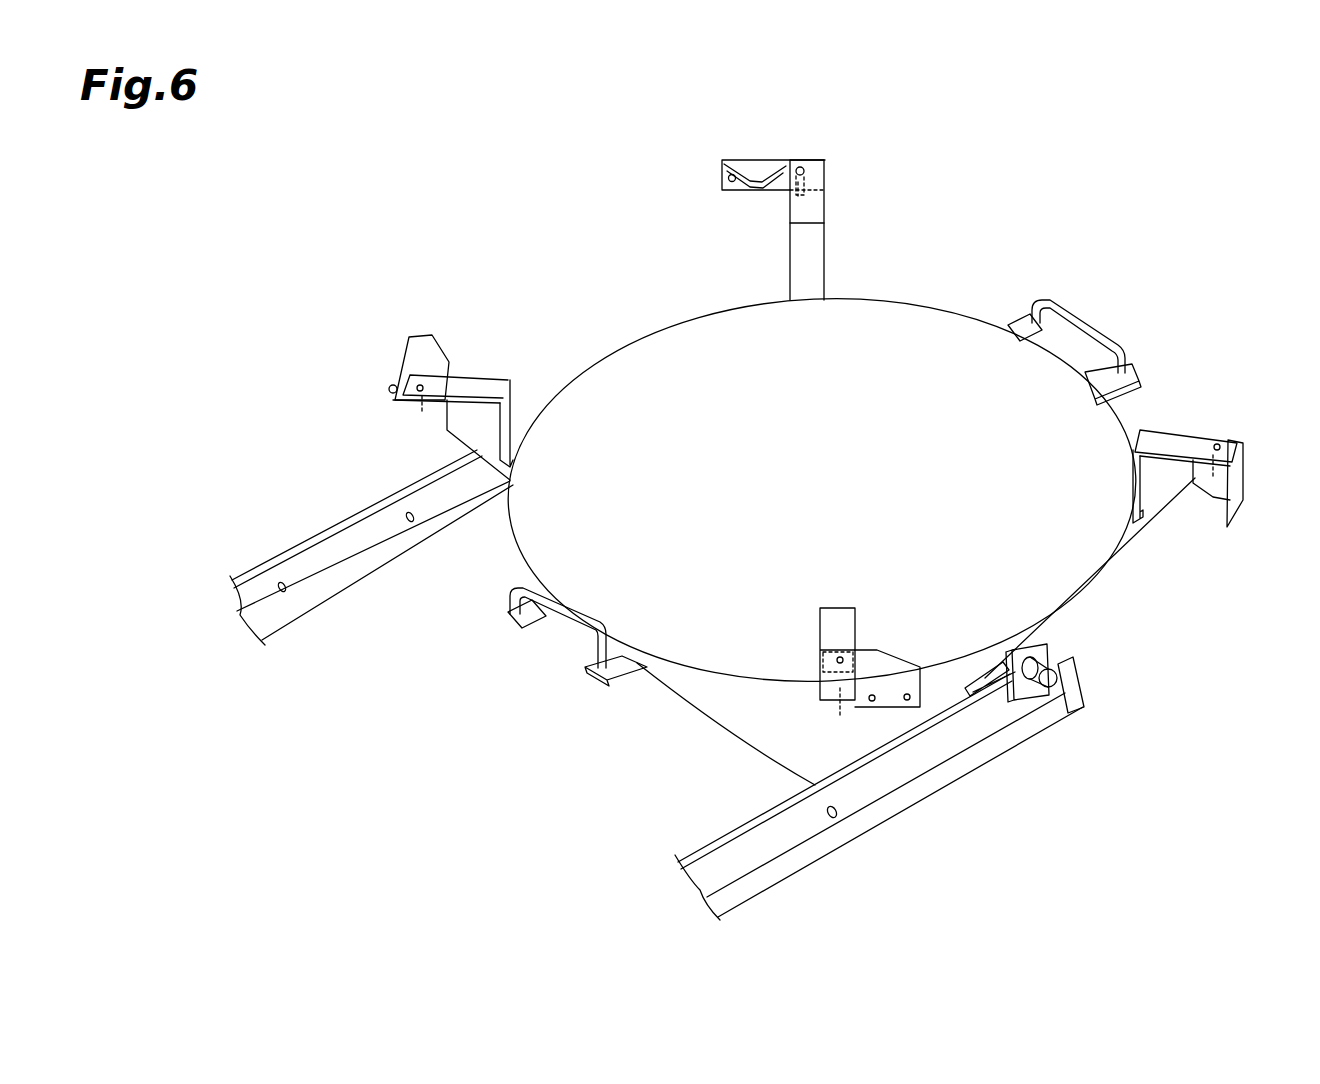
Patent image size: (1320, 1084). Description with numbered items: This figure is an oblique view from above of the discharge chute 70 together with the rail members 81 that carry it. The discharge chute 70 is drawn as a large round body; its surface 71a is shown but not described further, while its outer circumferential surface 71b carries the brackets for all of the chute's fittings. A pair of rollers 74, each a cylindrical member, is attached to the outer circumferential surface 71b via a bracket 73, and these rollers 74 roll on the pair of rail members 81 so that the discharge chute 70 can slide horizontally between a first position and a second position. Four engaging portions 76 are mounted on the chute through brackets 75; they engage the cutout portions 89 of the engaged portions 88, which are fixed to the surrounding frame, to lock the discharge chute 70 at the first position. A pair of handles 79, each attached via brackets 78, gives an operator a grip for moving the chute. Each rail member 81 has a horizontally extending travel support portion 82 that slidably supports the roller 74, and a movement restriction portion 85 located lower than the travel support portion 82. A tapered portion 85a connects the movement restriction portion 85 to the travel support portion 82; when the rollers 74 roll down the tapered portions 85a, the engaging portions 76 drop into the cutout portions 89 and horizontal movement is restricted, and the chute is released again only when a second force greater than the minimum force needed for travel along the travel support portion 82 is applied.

The discharge chute 70 is at (960, 303).
The upper surface of frame 71a is at (635, 385).
The outer circumferential surface 71b is at (762, 753).
The bracket 73 is at (975, 677).
The roller 74 is at (1063, 695).
The bracket 75 is at (810, 254).
The engaging portion 76 is at (808, 198).
The bracket 78 is at (1130, 379).
The handle 79 is at (1080, 326).
The rail member 81 is at (656, 698).
The travel support portion 82 is at (313, 537).
The movement restriction portion 85 is at (1050, 724).
The tapered portion 85a is at (1003, 690).
The engaged portion 88 is at (757, 172).
The cutout portion 89 is at (788, 165).